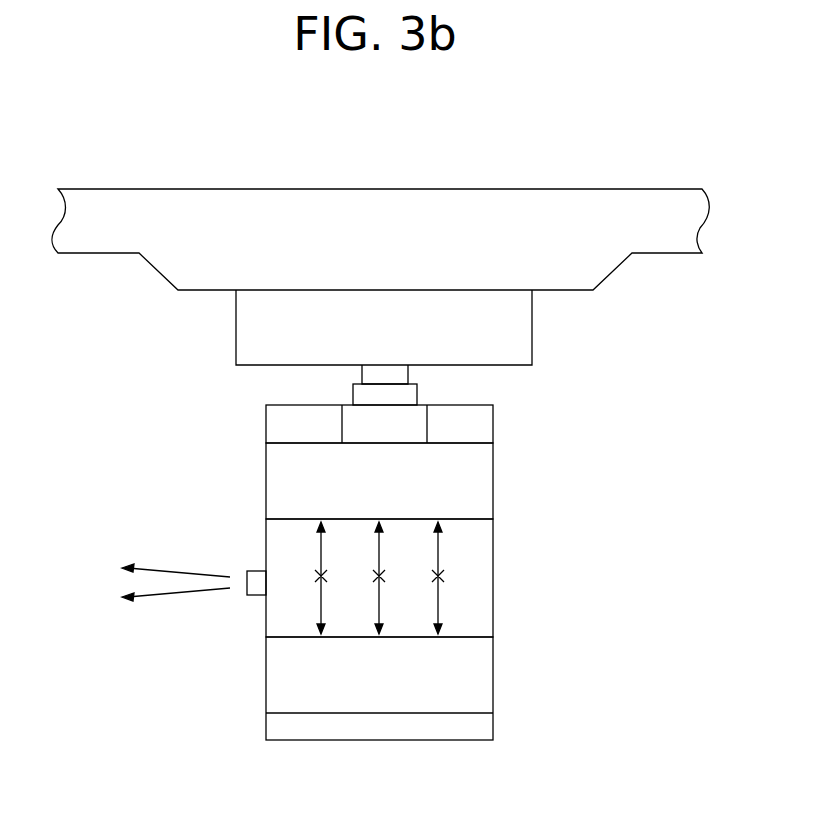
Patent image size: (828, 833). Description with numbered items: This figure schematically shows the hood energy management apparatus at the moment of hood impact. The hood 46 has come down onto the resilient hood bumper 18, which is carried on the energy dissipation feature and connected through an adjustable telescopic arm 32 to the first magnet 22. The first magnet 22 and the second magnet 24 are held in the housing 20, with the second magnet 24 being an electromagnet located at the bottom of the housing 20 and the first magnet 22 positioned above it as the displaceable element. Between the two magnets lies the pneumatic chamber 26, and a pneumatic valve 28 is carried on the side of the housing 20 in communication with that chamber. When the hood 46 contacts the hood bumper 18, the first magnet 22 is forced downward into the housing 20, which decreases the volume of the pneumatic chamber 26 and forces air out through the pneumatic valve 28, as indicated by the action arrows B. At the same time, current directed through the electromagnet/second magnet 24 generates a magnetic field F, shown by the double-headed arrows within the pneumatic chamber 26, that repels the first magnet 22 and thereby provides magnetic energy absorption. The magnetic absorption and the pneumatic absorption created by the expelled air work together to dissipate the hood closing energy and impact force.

The hood 46 is at (468, 212).
The hood bumper 18 is at (500, 326).
The adjustable telescopic arm 32 is at (400, 395).
The housing 20 is at (266, 426).
The first magnet 22 is at (467, 495).
The pneumatic chamber 26 is at (467, 570).
The second magnet 24 is at (467, 678).
The pneumatic valve 28 is at (255, 587).
The magnetic field F is at (379, 595).
The action arrows B is at (170, 572).